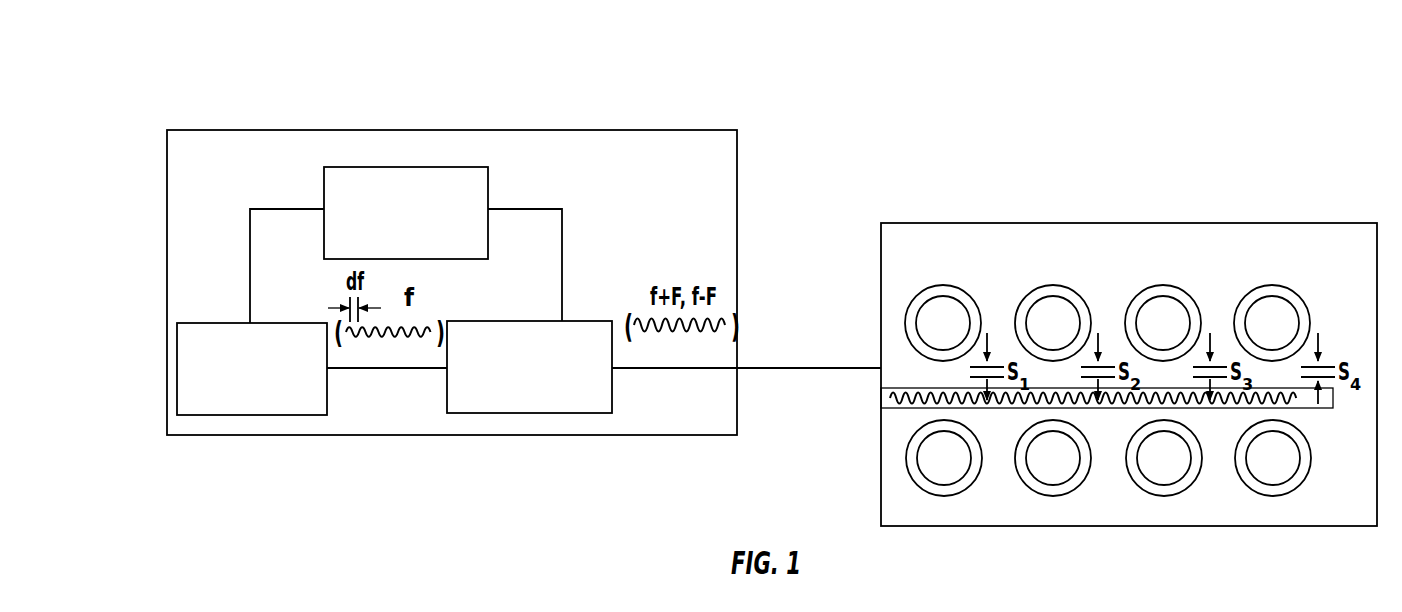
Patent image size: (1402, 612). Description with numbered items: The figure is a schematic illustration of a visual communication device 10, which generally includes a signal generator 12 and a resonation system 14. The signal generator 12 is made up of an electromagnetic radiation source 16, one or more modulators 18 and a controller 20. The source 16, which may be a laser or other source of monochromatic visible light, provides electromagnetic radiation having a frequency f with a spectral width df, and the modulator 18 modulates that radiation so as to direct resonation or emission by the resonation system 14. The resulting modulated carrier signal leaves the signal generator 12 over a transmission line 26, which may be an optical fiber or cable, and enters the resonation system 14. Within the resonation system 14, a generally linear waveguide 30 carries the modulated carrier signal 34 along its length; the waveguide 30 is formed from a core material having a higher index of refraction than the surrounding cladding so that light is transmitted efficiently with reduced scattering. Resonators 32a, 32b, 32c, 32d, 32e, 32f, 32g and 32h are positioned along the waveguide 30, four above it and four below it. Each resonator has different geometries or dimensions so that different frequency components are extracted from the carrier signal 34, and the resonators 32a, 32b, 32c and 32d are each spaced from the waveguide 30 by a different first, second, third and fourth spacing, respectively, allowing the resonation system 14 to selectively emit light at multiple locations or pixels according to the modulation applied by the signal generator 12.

The communication device 10 is at (455, 68).
The signal generator 12 is at (303, 127).
The resonation system 14 is at (1201, 221).
The electromagnetic radiation source 16 is at (260, 415).
The modulator 18 is at (512, 413).
The controller 20 is at (488, 192).
The transmission line 26 is at (824, 370).
The waveguide 30 is at (1329, 410).
The resonator 32a is at (968, 293).
The resonator 32b is at (1083, 297).
The resonator 32c is at (1168, 287).
The resonator 32d is at (1262, 287).
The resonator 32e is at (930, 494).
The resonator 32f is at (1040, 494).
The resonator 32g is at (1150, 494).
The resonator 32h is at (1250, 488).
The carrier signal 34 is at (905, 388).